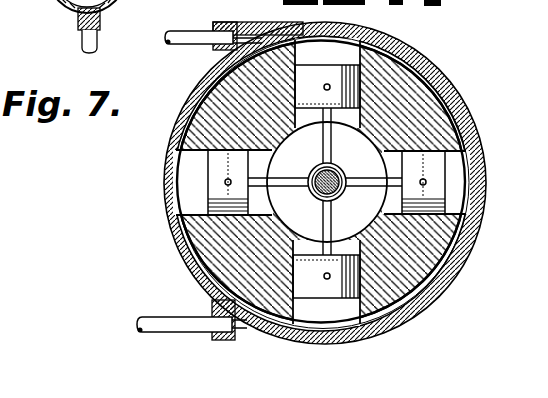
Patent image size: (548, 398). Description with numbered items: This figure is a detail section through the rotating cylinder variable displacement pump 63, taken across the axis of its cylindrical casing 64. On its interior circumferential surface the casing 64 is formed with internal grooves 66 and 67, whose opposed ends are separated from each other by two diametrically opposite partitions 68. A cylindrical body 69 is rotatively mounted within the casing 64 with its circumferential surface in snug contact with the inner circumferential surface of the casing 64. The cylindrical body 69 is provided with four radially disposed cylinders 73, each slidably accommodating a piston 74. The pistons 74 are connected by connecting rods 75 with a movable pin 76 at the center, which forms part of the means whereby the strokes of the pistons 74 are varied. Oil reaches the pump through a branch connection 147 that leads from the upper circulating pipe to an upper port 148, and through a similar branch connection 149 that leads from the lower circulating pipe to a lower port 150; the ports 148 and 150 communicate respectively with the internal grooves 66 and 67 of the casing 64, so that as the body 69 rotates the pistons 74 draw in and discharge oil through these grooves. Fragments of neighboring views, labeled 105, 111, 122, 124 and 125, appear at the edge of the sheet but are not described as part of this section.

The rotating cylinder variable displacement pump 63 is at (181, 105).
The cylindrical casing 64 is at (460, 105).
The internal groove 66 is at (417, 66).
The internal groove 67 is at (425, 290).
The partition 68 is at (168, 199).
The cylindrical body 69 is at (440, 247).
The cylinder 73 is at (172, 166).
The piston 74 is at (182, 236).
The connecting rod 75 is at (327, 133).
The movable pin 76 is at (333, 174).
The wheel 105 is at (60, 9).
The stem 111 is at (86, 44).
The bar 122 is at (441, 5).
The bar 124 is at (445, 3).
The bar 125 is at (280, 3).
The branch connection 147 is at (188, 33).
The upper port 148 is at (222, 58).
The branch connection 149 is at (172, 320).
The lower port 150 is at (228, 340).